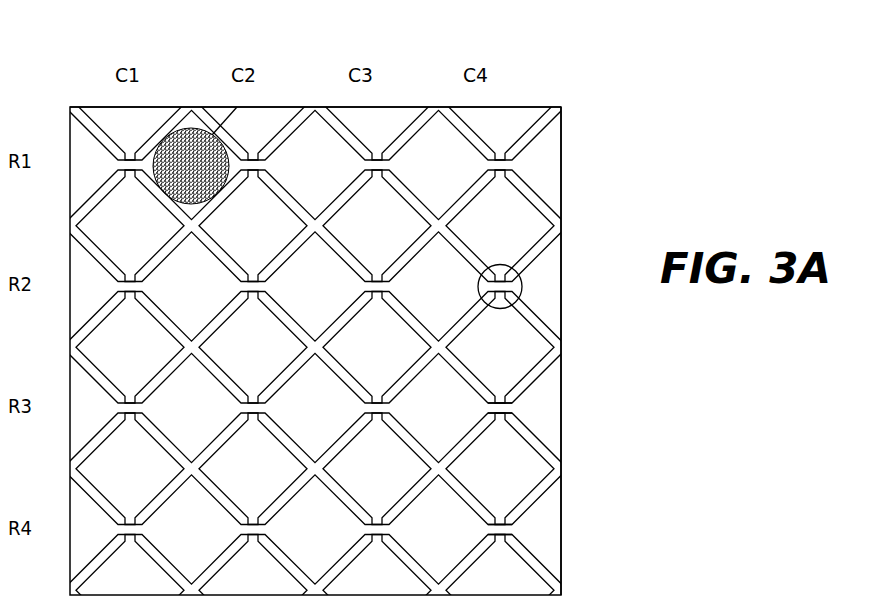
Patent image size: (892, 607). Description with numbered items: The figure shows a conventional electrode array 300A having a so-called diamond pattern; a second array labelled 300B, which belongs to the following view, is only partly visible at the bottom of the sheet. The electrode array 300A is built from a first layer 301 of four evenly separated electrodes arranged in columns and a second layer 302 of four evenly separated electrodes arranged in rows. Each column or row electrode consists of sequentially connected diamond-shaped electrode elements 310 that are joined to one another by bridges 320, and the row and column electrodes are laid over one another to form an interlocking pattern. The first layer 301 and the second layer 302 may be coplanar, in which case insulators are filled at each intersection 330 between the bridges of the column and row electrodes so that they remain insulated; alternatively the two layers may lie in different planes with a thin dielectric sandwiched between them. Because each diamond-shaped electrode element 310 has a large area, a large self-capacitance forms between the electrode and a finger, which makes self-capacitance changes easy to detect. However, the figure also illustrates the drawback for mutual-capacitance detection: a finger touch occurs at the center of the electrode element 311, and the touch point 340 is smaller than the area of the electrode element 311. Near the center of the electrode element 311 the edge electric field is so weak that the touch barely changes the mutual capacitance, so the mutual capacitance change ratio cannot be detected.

The electrode array 300A is at (512, 82).
The touch sensor electrode pattern (second) 300B is at (718, 600).
The first layer 301 is at (500, 122).
The second layer 302 is at (550, 183).
The diamond-shaped electrode element 310 is at (437, 269).
The electrode element 311 is at (192, 122).
The bridge 320 is at (500, 408).
The intersection 330 is at (523, 287).
The touch point 340 is at (212, 135).